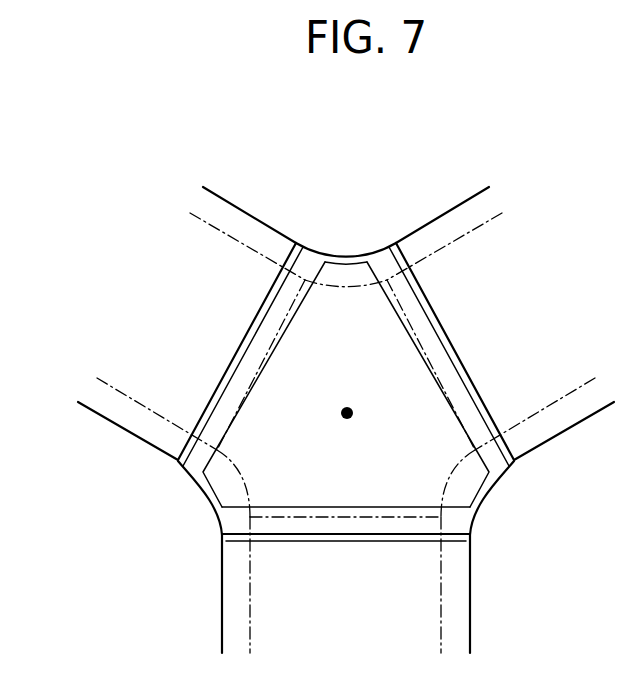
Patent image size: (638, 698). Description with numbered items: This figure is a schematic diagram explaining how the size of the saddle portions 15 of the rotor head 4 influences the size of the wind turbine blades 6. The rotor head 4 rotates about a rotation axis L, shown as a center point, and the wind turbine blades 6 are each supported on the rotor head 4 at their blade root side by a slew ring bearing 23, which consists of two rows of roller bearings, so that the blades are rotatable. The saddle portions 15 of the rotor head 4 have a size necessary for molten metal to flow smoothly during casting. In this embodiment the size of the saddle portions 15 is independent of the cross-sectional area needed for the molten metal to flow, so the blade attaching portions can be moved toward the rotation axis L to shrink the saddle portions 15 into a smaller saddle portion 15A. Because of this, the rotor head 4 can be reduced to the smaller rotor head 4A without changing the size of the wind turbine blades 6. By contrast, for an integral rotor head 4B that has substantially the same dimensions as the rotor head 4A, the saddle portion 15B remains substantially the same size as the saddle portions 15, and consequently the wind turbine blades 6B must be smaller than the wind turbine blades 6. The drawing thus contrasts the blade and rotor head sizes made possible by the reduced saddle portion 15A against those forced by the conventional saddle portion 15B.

The rotor head 4 is at (243, 520).
The rotor head 4A is at (402, 382).
The rotor head 4B is at (347, 512).
The wind turbine blades 6 is at (228, 200).
The wind turbine blades 6B is at (138, 403).
The saddle portions 15 is at (504, 470).
The saddle portion 15A is at (343, 263).
The saddle portion 15B is at (473, 417).
The slew ring bearing 23 is at (427, 292).
The rotation axis L is at (338, 418).